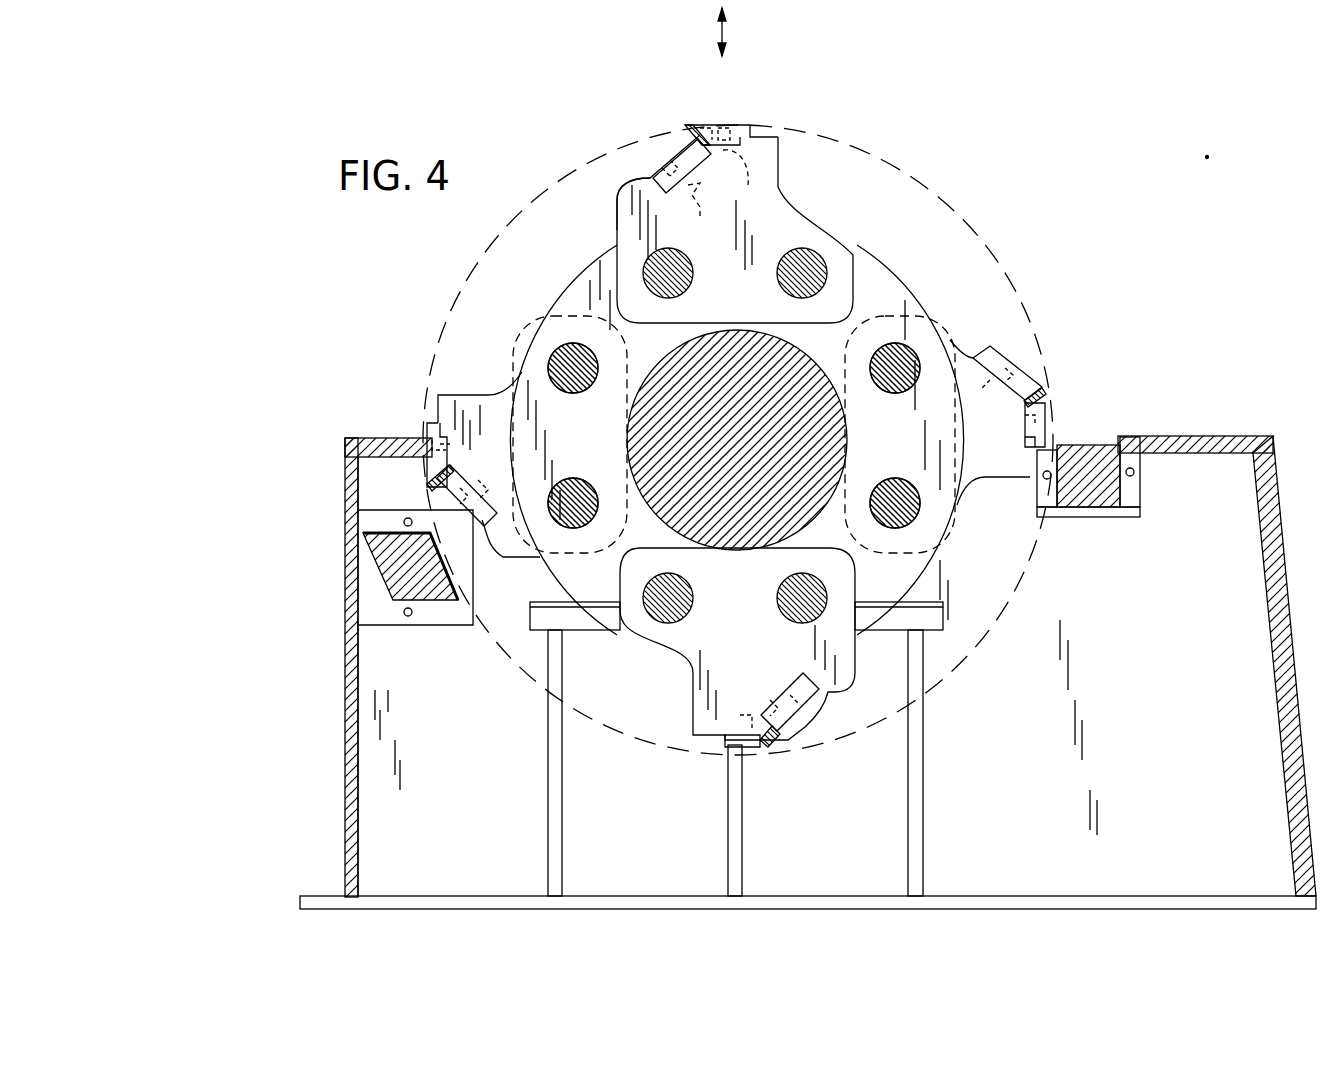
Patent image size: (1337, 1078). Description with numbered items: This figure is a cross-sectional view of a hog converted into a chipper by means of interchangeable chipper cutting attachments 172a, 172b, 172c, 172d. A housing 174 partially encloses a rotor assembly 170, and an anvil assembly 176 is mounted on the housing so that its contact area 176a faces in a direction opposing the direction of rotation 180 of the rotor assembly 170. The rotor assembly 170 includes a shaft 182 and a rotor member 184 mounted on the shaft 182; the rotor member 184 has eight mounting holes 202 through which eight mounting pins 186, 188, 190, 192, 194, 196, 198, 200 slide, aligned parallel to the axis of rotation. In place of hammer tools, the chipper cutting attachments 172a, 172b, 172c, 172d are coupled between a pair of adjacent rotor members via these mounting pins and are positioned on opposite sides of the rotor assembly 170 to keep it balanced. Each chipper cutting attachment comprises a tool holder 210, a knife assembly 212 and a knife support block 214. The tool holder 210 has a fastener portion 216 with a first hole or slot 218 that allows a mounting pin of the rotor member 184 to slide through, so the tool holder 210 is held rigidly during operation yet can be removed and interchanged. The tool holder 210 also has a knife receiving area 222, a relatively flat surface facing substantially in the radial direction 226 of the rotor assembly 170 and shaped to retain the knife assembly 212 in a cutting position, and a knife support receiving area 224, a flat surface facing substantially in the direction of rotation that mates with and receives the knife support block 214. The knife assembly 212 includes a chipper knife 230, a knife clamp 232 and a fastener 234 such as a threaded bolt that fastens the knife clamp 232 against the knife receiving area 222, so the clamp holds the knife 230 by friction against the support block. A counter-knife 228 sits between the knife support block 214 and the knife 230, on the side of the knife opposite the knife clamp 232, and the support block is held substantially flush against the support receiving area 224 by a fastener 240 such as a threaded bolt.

The rotor assembly 170 is at (925, 252).
The chipper cutting attachment 172a is at (731, 166).
The chipper cutting attachment 172b is at (803, 654).
The chipper cutting attachment 172c is at (986, 456).
The chipper cutting attachment 172d is at (481, 450).
The housing 174 is at (348, 826).
The anvil assembly 176 is at (430, 607).
The contact area 176a is at (428, 508).
The direction of rotation 180 is at (685, 62).
The shaft 182 is at (850, 330).
The rotor member 184 is at (915, 298).
The mounting pin 186 is at (588, 388).
The mounting pin 188 is at (586, 527).
The mounting pin 190 is at (680, 590).
The mounting pin 192 is at (790, 612).
The mounting pin 194 is at (883, 488).
The mounting pin 196 is at (915, 380).
The mounting pin 198 is at (778, 265).
The mounting pin 200 is at (688, 282).
The mounting hole 202 is at (578, 362).
The tool holder 210 is at (768, 150).
The knife assembly 212 is at (723, 108).
The knife support block 214 is at (655, 165).
The fastener portion 216 is at (808, 243).
The first hole or slot 218 is at (722, 271).
The knife receiving area 222 is at (733, 130).
The knife support receiving area 224 is at (650, 176).
The radial direction 226 is at (720, 36).
The counter-knife 228 is at (672, 150).
The chipper knife 230 is at (705, 128).
The knife clamp 232 is at (718, 127).
The fastener 234 is at (747, 180).
The fastener 240 is at (699, 213).